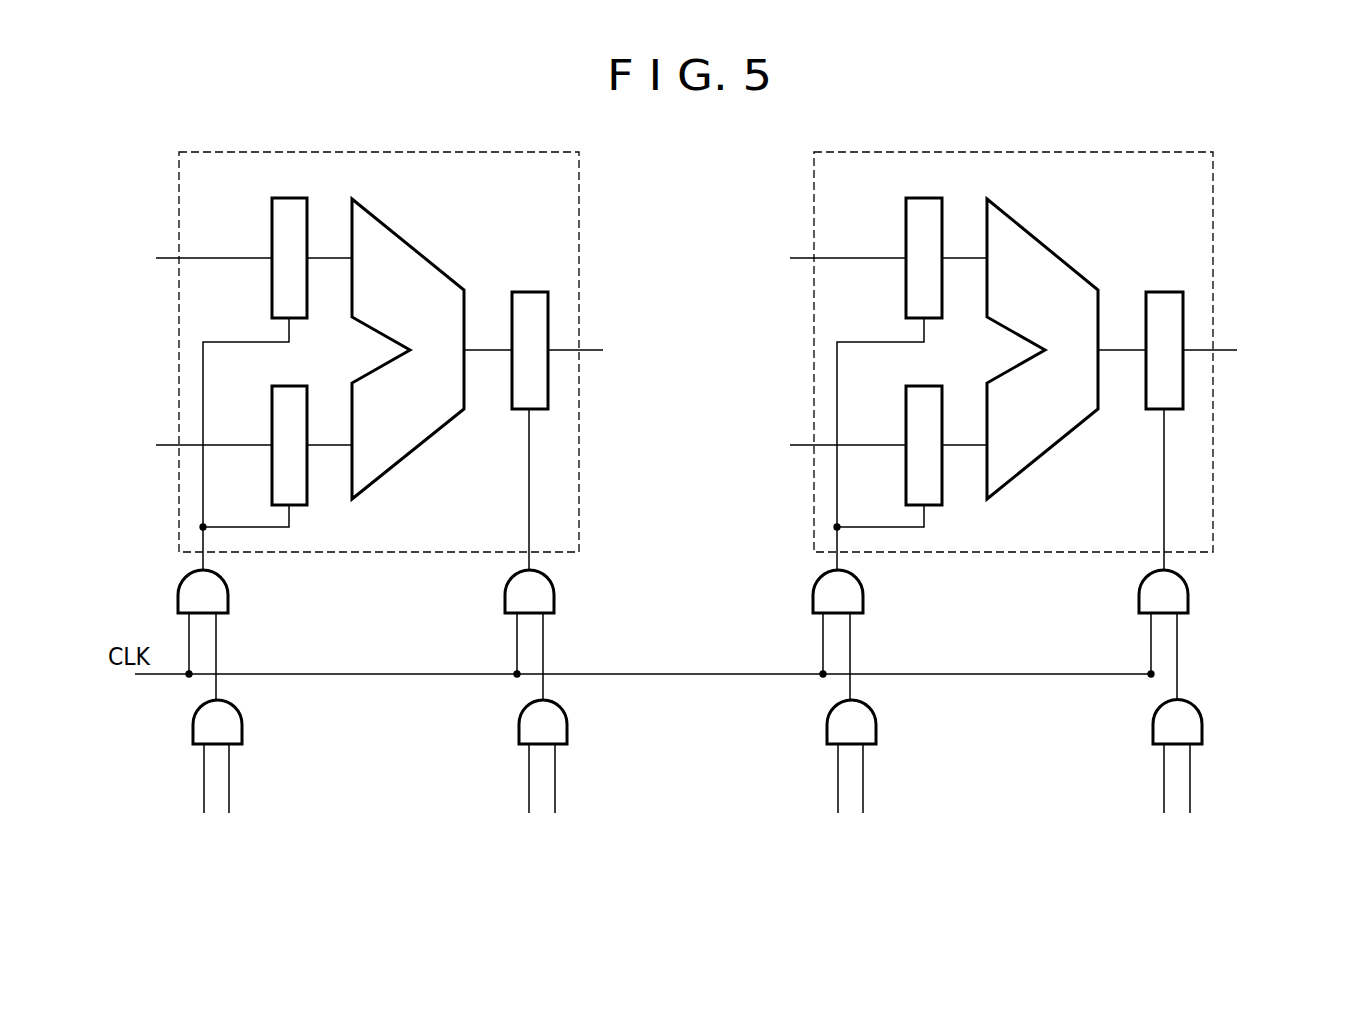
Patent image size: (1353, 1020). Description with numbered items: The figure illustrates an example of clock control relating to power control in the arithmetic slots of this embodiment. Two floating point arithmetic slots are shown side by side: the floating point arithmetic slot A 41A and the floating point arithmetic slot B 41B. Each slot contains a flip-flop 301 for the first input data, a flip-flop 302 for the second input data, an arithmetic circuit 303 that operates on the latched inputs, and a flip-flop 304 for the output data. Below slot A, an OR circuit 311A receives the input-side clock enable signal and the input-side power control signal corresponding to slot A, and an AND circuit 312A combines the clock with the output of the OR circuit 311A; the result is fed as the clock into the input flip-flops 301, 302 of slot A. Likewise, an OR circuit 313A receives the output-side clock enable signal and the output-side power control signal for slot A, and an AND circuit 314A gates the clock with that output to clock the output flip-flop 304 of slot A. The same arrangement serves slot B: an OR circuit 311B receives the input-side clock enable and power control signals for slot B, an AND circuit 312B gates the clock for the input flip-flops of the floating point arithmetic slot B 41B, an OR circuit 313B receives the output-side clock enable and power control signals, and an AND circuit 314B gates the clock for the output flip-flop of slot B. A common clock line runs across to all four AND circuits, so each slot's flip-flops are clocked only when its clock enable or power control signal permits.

The floating point arithmetic slot A 41A is at (362, 152).
The floating point arithmetic slot B 41B is at (997, 152).
The flip-flop for input data 301 is at (272, 225).
The flip-flop for input data 302 is at (272, 463).
The arithmetic circuit 303 is at (415, 247).
The flip-flop for output data 304 is at (528, 292).
The OR circuit 311A is at (242, 730).
The AND circuit 312A is at (228, 592).
The OR circuit 313A is at (567, 730).
The AND circuit 314A is at (554, 592).
The OR circuit 311B is at (876, 730).
The AND circuit 312B is at (863, 592).
The OR circuit 313B is at (1202, 730).
The AND circuit 314B is at (1188, 592).